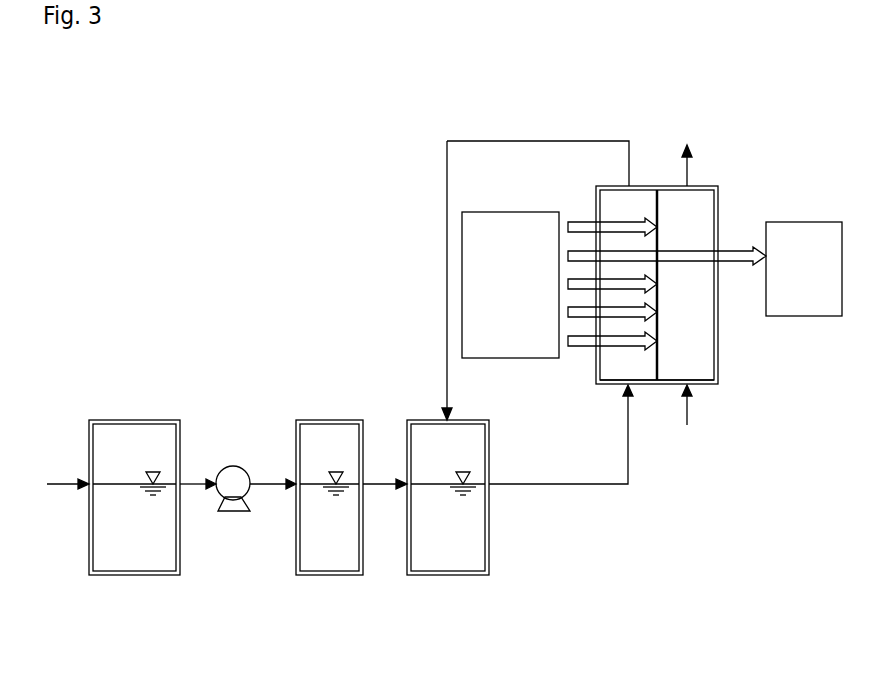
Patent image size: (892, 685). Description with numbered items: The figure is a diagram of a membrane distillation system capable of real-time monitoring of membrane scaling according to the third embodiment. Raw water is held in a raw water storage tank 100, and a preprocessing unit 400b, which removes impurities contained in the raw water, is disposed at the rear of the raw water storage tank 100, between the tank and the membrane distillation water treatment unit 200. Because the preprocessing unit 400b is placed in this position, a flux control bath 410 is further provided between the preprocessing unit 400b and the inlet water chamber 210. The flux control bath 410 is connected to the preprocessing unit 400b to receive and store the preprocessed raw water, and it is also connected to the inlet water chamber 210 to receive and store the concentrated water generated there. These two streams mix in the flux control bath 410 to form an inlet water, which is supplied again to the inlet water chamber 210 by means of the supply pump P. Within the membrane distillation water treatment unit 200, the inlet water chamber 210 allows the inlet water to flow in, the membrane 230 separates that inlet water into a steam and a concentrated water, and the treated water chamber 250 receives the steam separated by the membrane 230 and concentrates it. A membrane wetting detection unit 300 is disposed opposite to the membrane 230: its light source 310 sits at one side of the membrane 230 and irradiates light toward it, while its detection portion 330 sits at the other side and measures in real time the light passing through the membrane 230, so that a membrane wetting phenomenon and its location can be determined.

The raw water storage tank 100 is at (133, 420).
The supply pump P is at (247, 469).
The preprocessing unit 400b is at (330, 576).
The flux control bath 410 is at (452, 576).
The membrane distillation water treatment unit 200 is at (780, 453).
The inlet water chamber 210 is at (630, 381).
The membrane 230 is at (659, 362).
The treated water chamber 250 is at (701, 380).
The membrane wetting detection unit 300 is at (735, 98).
The light source 310 is at (540, 203).
The detection portion 330 is at (792, 212).